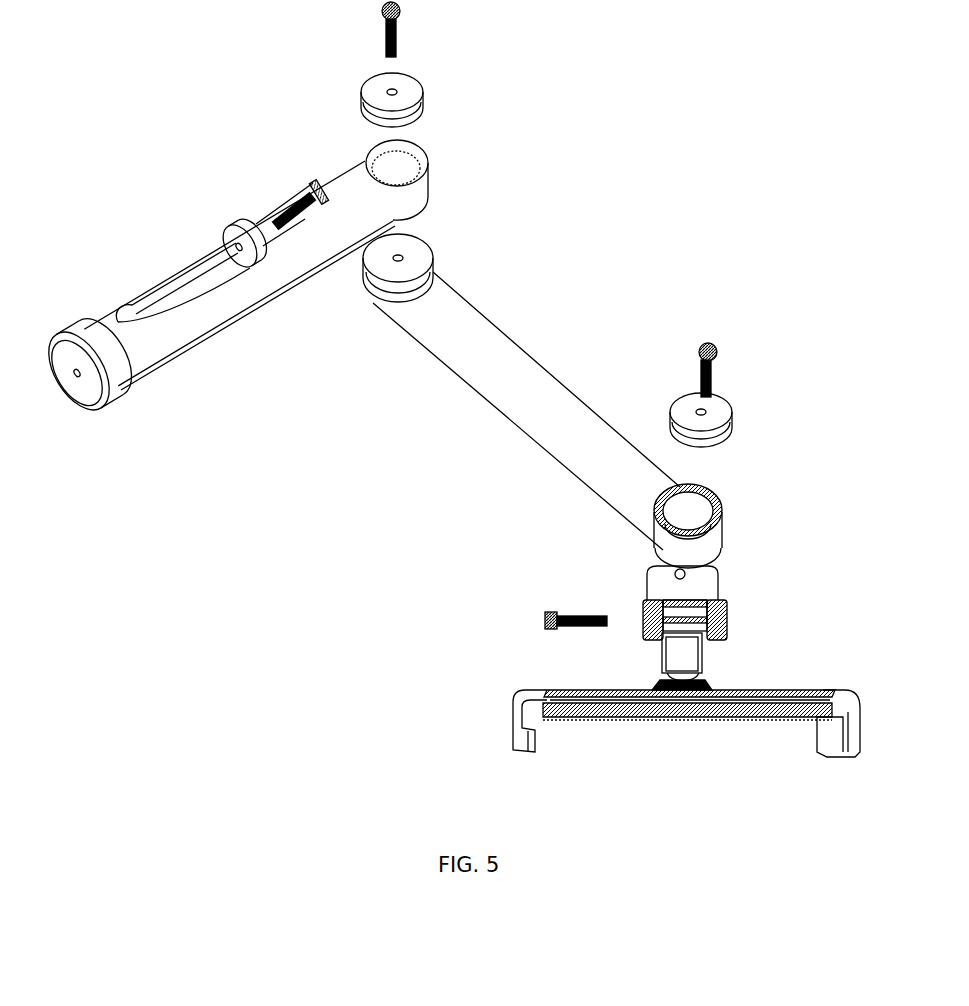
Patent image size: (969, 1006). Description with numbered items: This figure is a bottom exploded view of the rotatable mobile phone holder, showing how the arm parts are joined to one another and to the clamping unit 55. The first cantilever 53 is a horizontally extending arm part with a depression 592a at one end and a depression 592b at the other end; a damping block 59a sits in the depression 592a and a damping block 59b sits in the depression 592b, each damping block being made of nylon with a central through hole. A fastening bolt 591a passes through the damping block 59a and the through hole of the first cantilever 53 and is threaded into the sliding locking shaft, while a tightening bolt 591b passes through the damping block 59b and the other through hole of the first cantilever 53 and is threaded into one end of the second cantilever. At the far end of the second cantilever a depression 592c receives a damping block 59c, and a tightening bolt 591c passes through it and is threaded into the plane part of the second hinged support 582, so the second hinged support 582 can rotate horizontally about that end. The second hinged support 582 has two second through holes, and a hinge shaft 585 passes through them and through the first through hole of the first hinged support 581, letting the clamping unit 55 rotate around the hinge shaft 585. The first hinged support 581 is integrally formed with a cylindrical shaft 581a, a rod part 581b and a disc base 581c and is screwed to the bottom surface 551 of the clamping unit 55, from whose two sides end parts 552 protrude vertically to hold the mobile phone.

The first cantilever 53 is at (207, 338).
The clamping unit 55 is at (655, 689).
The damping block 59a is at (240, 223).
The damping block 59b is at (421, 107).
The damping block 59c is at (731, 424).
The bottom surface 551 is at (627, 718).
The end parts 552 is at (462, 707).
The first hinged support 581 is at (710, 653).
The cylindrical shaft 581a is at (660, 662).
The rod part 581b is at (672, 682).
The disc base 581c is at (701, 684).
The second hinged support 582 is at (733, 622).
The hinge shaft 585 is at (583, 610).
The fastening bolt 591a is at (298, 195).
The tightening bolt 591b is at (400, 31).
The tightening bolt 591c is at (714, 377).
The depression 592a is at (158, 298).
The depression 592b is at (402, 153).
The depression 592c is at (692, 504).